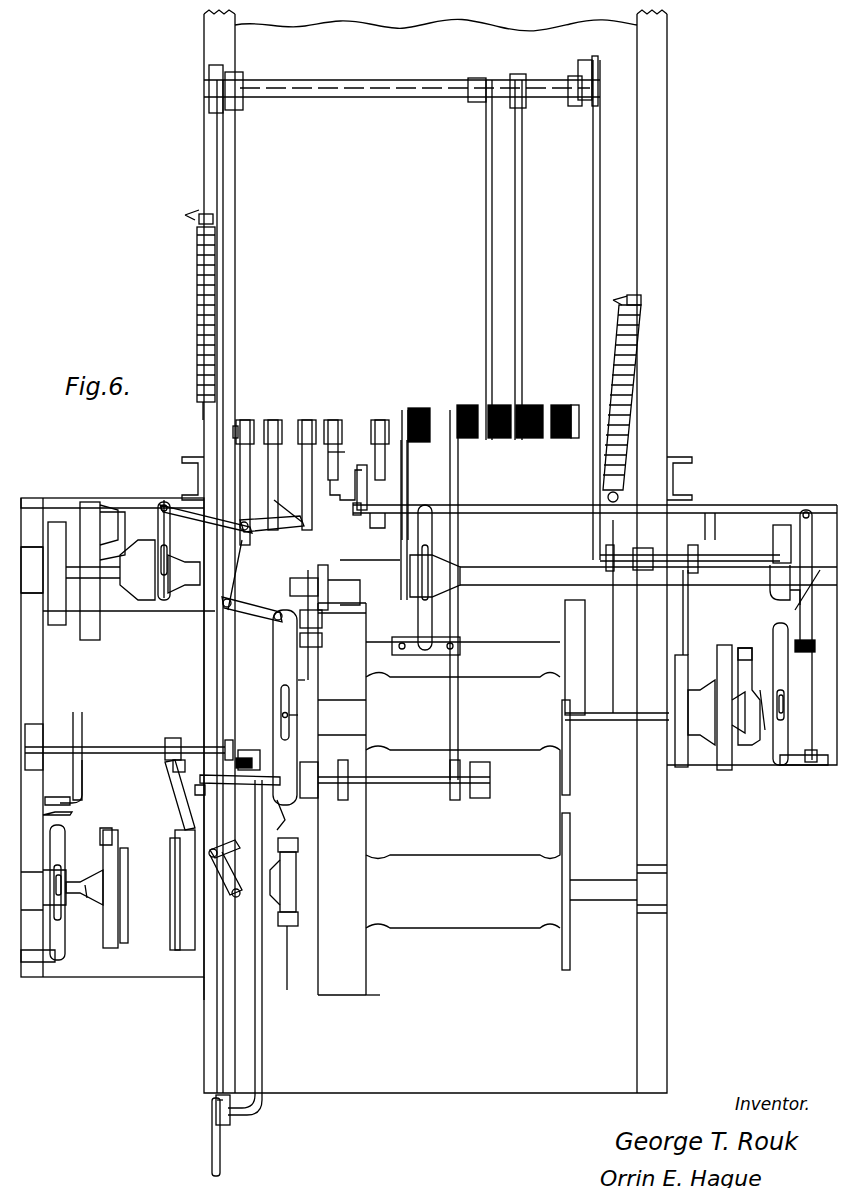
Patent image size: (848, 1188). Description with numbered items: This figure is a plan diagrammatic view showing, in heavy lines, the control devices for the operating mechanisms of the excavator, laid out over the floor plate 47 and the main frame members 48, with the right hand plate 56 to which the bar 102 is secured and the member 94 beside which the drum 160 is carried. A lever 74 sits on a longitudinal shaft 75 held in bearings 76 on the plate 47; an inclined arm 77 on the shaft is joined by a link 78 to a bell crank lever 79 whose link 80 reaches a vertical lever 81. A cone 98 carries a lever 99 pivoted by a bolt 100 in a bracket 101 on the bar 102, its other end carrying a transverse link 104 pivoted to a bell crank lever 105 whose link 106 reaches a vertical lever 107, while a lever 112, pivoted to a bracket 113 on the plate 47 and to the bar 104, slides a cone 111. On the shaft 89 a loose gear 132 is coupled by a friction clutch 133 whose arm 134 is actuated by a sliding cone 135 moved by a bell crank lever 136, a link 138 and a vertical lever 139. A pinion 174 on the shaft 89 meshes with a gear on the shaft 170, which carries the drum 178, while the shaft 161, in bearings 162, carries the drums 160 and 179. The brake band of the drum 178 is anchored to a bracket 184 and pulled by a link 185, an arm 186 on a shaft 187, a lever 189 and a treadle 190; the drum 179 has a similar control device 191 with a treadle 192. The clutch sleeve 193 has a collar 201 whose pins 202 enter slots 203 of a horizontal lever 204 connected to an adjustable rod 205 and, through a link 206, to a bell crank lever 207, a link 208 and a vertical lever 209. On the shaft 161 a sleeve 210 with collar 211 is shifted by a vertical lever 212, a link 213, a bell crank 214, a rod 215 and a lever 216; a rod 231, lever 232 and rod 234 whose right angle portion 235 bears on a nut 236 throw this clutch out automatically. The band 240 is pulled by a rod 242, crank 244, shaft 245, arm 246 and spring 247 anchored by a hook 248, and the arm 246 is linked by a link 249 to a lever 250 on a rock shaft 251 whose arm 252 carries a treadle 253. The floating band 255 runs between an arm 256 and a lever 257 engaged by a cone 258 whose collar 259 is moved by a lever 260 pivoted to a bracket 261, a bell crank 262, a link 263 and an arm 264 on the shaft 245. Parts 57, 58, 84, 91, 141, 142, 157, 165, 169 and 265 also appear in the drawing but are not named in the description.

The base frame 47 is at (403, 1016).
The frame upright 48 is at (655, 46).
The bracket 56 is at (198, 470).
The link 57 is at (240, 792).
The bracket 58 is at (674, 481).
The collar 74 is at (322, 648).
The rod 75 is at (312, 625).
The collar 76 is at (312, 577).
The sleeve 77 is at (325, 587).
The arm 78 is at (350, 592).
The shaft 79 is at (365, 568).
The arm 80 is at (352, 472).
The hanger bar 81 is at (380, 420).
The frame bar 84 is at (463, 659).
The shaft 89 is at (648, 576).
The bearing 91 is at (32, 570).
The frame 94 is at (40, 674).
The link 98 is at (786, 600).
The lever 99 is at (800, 510).
The block 100 is at (830, 660).
The rod 101 is at (825, 678).
The bracket 102 is at (814, 747).
The frame bar 104 is at (735, 504).
The bar 105 is at (357, 487).
The pin 106 is at (346, 449).
The hanger bar 107 is at (335, 420).
The cone 111 is at (445, 572).
The slotted lever 112 is at (432, 614).
The bracket 113 is at (410, 655).
The gear 132 is at (55, 625).
The plate 133 is at (100, 620).
The bracket 134 is at (112, 528).
The cone 135 is at (145, 603).
The slotted bar 136 is at (168, 540).
The pin 138 is at (275, 388).
The hanger bar 139 is at (272, 420).
The bar 141 is at (230, 627).
The rod 142 is at (183, 549).
The lever 157 is at (165, 502).
The cone 160 is at (101, 887).
The plate 161 is at (195, 898).
The frame member 162 is at (225, 922).
The arm 165 is at (45, 840).
The cone 169 is at (716, 712).
The frame bar 170 is at (617, 620).
The plate 174 is at (600, 720).
The drum 178 is at (468, 779).
The drum 179 is at (468, 891).
The plate 184 is at (366, 618).
The plate 185 is at (366, 606).
The bar 186 is at (354, 509).
The bracket 187 is at (370, 522).
The rod 189 is at (408, 464).
The cam rod 190 is at (425, 408).
The shaft 191 is at (408, 786).
The cam 192 is at (478, 405).
The slot 193 is at (292, 700).
The frame column 201 is at (300, 745).
The pin 202 is at (298, 720).
The pin 203 is at (326, 681).
The lever 204 is at (262, 680).
The lever end 205 is at (284, 815).
The link 206 is at (252, 581).
The lever 207 is at (272, 519).
The link 208 is at (298, 508).
The hanger bar 209 is at (308, 420).
The clutch 210 is at (300, 893).
The collar 211 is at (300, 918).
The collar 212 is at (300, 850).
The rod 213 is at (262, 955).
The bell crank 214 is at (210, 858).
The pin 215 is at (209, 803).
The hanger bar 216 is at (255, 410).
The lever 231 is at (220, 1155).
The block 232 is at (230, 1125).
The rod 234 is at (263, 998).
The block 235 is at (250, 752).
The clamp 236 is at (230, 761).
The plate 240 is at (180, 950).
The rod 242 is at (180, 810).
The collar 244 is at (173, 766).
The shaft 245 is at (145, 746).
The bearing 246 is at (225, 740).
The spring 247 is at (197, 272).
The spring anchor 248 is at (197, 218).
The rod 249 is at (226, 183).
The gear 250 is at (598, 85).
The shaft 251 is at (352, 90).
The rod 252 is at (522, 196).
The rod 253 is at (486, 210).
The plate 255 is at (122, 945).
The block 256 is at (113, 825).
The plate 257 is at (118, 838).
The rod 258 is at (120, 900).
The pin 259 is at (62, 872).
The slotted lever 260 is at (65, 925).
The bracket 261 is at (55, 960).
The link 262 is at (72, 802).
The arm 263 is at (84, 770).
The lever 264 is at (82, 712).
The cam 265 is at (500, 440).